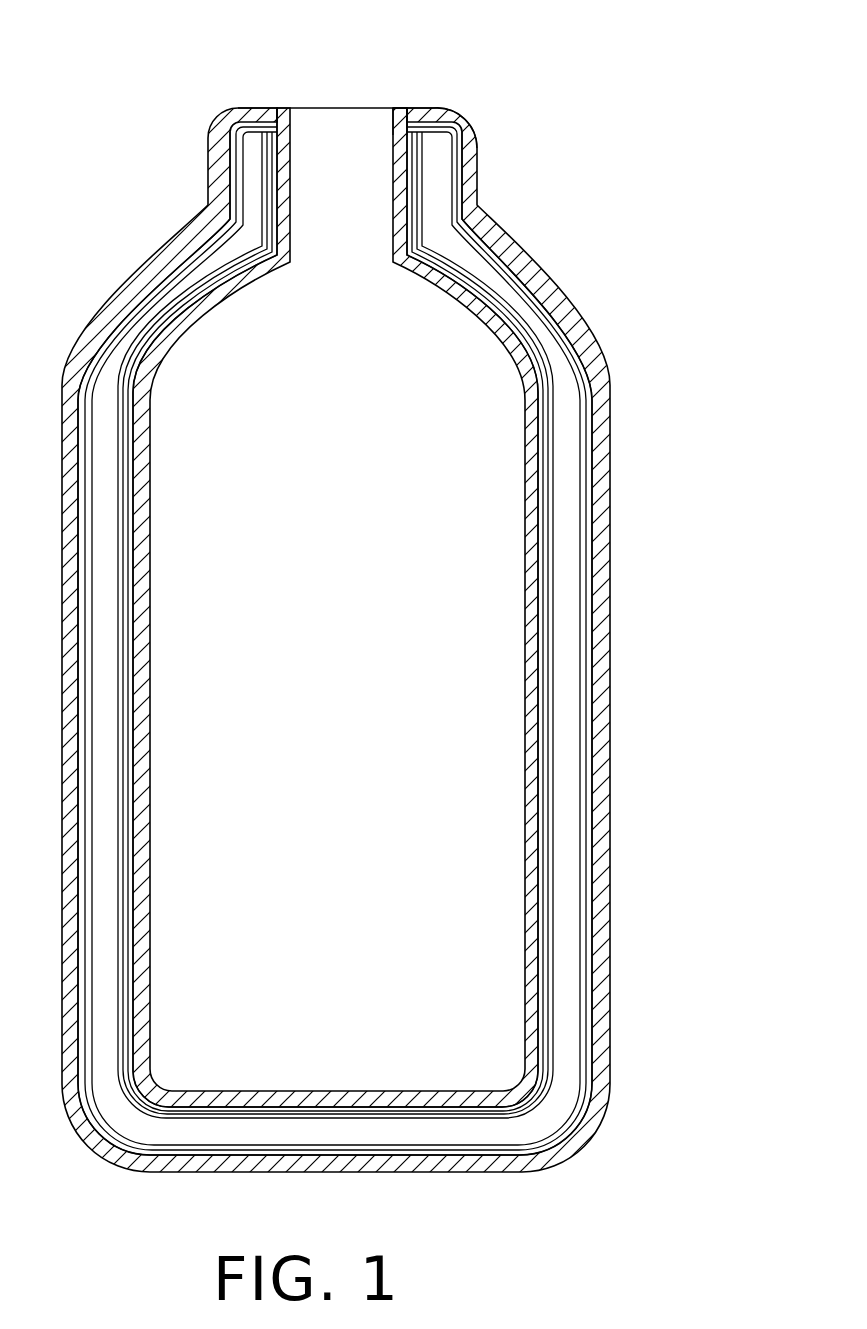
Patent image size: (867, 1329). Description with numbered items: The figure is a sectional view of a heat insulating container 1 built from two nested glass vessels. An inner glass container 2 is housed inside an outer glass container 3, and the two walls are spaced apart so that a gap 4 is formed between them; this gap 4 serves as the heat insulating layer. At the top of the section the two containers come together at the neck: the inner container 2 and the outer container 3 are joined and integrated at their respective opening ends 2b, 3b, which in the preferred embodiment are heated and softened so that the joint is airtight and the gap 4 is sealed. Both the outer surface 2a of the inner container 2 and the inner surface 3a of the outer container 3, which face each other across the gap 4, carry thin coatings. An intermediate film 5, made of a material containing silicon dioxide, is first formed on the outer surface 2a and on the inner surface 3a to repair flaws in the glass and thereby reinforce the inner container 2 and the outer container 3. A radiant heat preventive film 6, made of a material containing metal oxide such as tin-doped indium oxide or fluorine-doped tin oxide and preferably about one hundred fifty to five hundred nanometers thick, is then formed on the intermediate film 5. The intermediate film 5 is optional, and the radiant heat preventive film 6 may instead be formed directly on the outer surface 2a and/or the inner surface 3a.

The heat insulating container 1 is at (582, 224).
The inner glass container 2 is at (525, 544).
The outer surface of the inner container 2a is at (553, 599).
The opening end of the inner container 2b is at (398, 108).
The outer glass container 3 is at (610, 528).
The inner surface of the outer container 3a is at (580, 641).
The opening end of the outer container 3b is at (428, 108).
The gap 4 is at (569, 686).
The intermediate film 5 is at (540, 747).
The radiant heat preventive film 6 is at (552, 799).